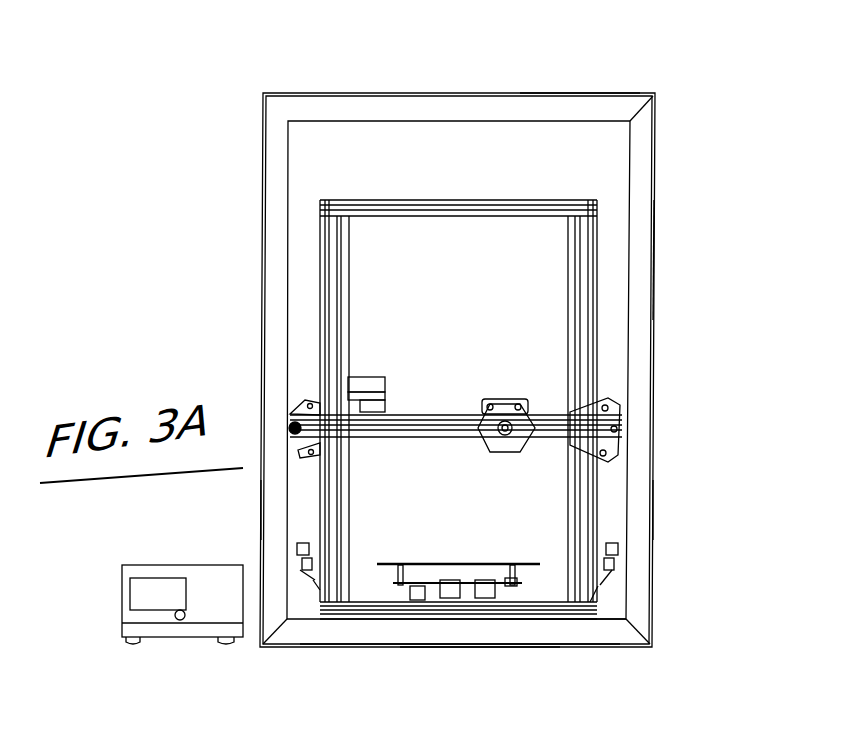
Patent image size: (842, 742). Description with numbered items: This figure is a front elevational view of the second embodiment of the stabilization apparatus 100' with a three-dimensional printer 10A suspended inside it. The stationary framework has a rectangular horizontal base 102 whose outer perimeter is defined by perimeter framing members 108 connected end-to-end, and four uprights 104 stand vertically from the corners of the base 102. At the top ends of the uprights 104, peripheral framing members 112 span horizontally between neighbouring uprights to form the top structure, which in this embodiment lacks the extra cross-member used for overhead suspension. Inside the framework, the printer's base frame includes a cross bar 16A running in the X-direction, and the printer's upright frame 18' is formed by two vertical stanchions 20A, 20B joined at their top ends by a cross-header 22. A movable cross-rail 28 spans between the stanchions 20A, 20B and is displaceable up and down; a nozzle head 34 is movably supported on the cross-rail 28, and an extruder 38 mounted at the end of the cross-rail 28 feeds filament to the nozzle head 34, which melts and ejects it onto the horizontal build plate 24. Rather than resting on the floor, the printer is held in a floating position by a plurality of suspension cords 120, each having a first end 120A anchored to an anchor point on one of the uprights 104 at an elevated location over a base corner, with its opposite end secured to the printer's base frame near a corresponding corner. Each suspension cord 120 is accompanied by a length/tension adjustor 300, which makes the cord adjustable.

The control unit 10A is at (268, 172).
The uprights 104 is at (654, 168).
The peripheral framing members 112 is at (497, 120).
The enclosure top wall 18' is at (580, 73).
The stabilization apparatus 100' is at (709, 260).
The horizontal base 102 is at (378, 637).
The perimeter framing members 108 is at (475, 633).
The cross bar 16A is at (560, 632).
The stanchion 20A is at (343, 296).
The stanchion 20B is at (578, 290).
The cross-header 22 is at (485, 212).
The movable cross-rail 28 is at (432, 418).
The extruder 38 is at (366, 378).
The nozzle head 34 is at (485, 440).
The build plate 24 is at (445, 563).
The length/tension adjustor 300 is at (312, 552).
The suspension cords 120 is at (313, 580).
The first end 120A is at (263, 509).